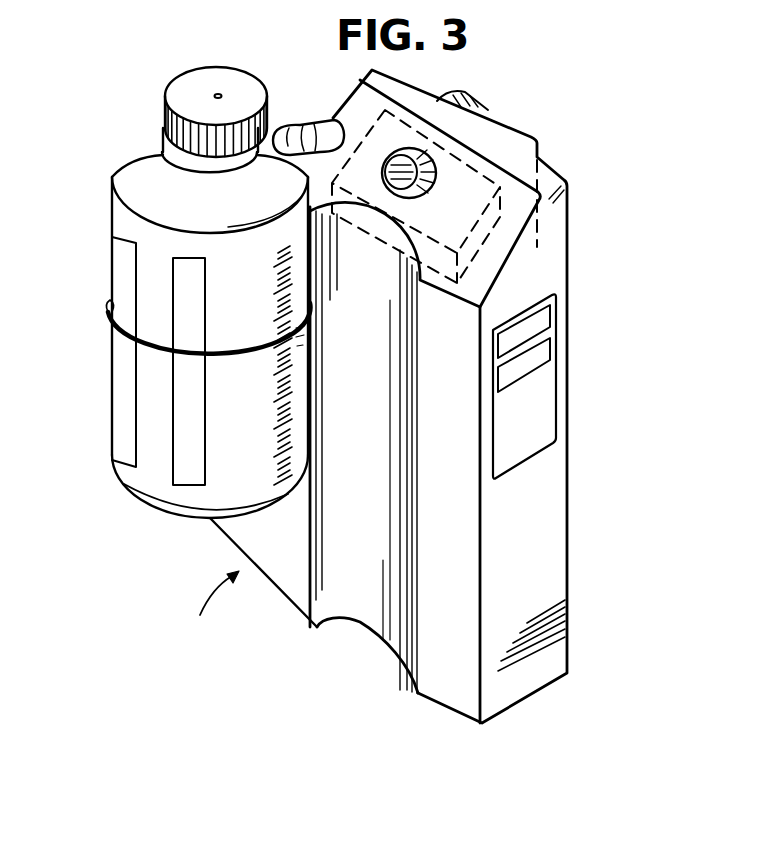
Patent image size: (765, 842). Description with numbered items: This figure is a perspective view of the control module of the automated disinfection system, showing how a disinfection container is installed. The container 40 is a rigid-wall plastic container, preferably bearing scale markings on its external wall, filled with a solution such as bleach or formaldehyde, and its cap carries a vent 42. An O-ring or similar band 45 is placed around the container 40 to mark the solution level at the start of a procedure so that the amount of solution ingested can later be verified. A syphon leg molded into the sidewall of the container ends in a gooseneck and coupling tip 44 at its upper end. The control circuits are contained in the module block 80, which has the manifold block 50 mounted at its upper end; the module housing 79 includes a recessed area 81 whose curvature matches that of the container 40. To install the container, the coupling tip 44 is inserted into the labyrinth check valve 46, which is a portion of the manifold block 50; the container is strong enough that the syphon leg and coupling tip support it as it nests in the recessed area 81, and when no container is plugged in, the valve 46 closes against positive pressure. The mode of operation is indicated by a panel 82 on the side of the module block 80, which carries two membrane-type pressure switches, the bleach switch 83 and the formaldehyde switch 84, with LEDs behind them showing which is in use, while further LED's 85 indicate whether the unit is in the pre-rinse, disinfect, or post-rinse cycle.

The container 40 is at (110, 418).
The vent 42 is at (223, 95).
The coupling tip 44 is at (323, 124).
The band 45 is at (116, 325).
The labyrinth check valve 46 is at (436, 187).
The manifold block 50 is at (514, 131).
The module housing 79 is at (241, 531).
The module block 80 is at (199, 618).
The recessed area 81 is at (374, 580).
The panel 82 is at (553, 368).
The bleach switch 83 is at (551, 314).
The formaldehyde switch 84 is at (552, 368).
The LED's 85 is at (556, 408).